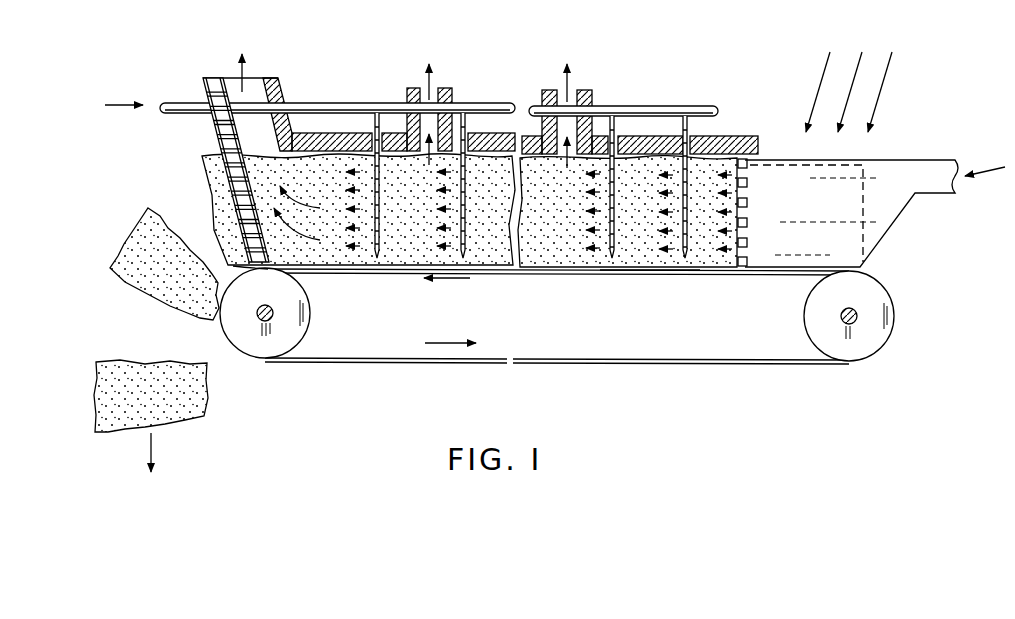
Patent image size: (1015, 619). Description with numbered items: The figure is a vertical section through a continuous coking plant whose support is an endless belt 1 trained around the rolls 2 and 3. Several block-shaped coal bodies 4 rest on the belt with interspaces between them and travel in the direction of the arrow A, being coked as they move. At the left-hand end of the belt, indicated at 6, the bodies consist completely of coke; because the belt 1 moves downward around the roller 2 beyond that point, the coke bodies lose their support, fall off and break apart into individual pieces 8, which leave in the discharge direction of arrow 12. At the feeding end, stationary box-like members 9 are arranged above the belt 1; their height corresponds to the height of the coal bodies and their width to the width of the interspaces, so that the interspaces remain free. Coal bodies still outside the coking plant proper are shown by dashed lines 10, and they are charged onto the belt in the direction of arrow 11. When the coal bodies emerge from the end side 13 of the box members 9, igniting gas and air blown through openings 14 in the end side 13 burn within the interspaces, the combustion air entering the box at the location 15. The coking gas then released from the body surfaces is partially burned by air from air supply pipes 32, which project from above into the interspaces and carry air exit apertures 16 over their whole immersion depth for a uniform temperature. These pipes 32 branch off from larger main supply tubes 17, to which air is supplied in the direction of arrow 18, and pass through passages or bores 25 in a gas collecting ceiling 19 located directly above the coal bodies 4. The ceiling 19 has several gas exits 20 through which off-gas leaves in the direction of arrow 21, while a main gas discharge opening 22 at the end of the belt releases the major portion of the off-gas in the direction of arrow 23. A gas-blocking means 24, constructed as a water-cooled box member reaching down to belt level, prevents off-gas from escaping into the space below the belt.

The endless belt 1 is at (558, 360).
The roll 2 is at (262, 350).
The roll 3 is at (860, 350).
The coal bodies 4 is at (707, 163).
The point at left-hand end of belt 6 is at (233, 268).
The individual pieces 8 is at (135, 220).
The box-like members 9 is at (927, 162).
The dashed lines 10 is at (865, 205).
The arrow 11 is at (830, 56).
The arrow 12 is at (147, 448).
The end side 13 is at (743, 158).
The opening 14 is at (747, 182).
The combustion air entry location 15 is at (990, 157).
The air exit apertures 16 is at (610, 247).
The main supply tubes 17 is at (177, 101).
The arrow 18 is at (128, 98).
The gas collecting ceiling 19 is at (340, 133).
The gas exits 20 is at (543, 92).
The arrow 21 is at (425, 86).
The main gas discharge opening 22 is at (263, 85).
The arrow 23 is at (247, 80).
The gas-blocking means 24 is at (215, 76).
The passages or bores 25 is at (707, 165).
The air supply pipes 32 is at (672, 276).
The arrow A is at (458, 279).